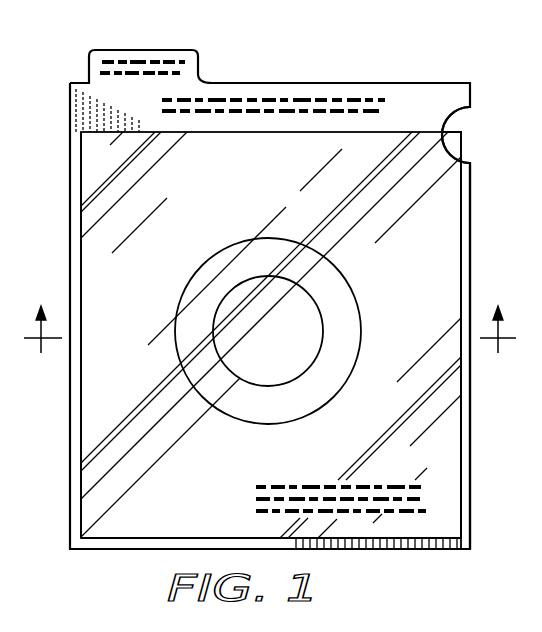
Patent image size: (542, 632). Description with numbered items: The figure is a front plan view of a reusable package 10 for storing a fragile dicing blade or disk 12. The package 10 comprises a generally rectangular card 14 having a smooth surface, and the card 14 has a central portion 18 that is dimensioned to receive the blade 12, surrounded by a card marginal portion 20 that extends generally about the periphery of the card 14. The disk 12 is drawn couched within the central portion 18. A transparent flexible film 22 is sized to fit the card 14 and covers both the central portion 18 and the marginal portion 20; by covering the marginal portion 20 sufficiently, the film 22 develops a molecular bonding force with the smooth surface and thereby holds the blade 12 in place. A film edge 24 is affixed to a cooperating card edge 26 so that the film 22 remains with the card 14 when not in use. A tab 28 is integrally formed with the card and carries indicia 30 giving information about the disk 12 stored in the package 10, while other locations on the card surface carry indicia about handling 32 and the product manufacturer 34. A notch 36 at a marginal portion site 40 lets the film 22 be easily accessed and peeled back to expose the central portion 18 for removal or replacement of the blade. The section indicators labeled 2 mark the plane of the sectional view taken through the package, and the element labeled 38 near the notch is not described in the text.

The reusable package 10 is at (447, 58).
The dicing blade or disk 12 is at (350, 328).
The card 14 is at (78, 97).
The central portion 18 is at (285, 339).
The card marginal portion 20 is at (297, 199).
The transparent flexible film 22 is at (94, 149).
The film edge 24 is at (472, 541).
The card edge 26 is at (455, 530).
The tab 28 is at (201, 68).
The indicia 30 is at (151, 70).
The handling indicia 32 is at (288, 96).
The product manufacturer indicia 34 is at (375, 479).
The notch 36 is at (456, 112).
The inner corner 38 is at (453, 151).
The marginal portion site 40 is at (450, 209).
The section line 2- 2 is at (270, 347).